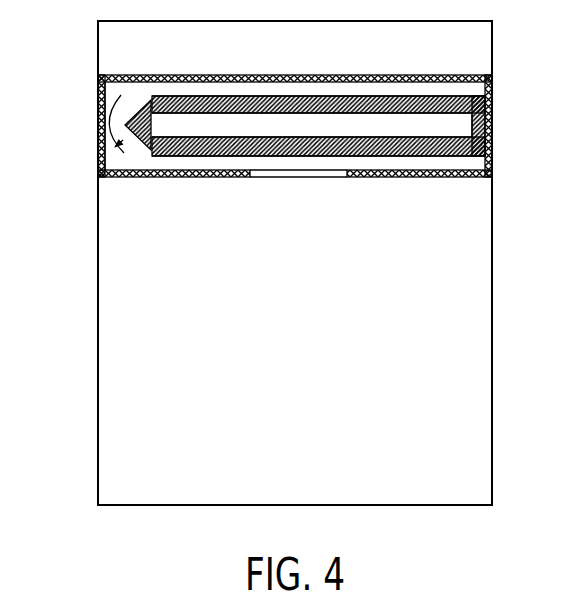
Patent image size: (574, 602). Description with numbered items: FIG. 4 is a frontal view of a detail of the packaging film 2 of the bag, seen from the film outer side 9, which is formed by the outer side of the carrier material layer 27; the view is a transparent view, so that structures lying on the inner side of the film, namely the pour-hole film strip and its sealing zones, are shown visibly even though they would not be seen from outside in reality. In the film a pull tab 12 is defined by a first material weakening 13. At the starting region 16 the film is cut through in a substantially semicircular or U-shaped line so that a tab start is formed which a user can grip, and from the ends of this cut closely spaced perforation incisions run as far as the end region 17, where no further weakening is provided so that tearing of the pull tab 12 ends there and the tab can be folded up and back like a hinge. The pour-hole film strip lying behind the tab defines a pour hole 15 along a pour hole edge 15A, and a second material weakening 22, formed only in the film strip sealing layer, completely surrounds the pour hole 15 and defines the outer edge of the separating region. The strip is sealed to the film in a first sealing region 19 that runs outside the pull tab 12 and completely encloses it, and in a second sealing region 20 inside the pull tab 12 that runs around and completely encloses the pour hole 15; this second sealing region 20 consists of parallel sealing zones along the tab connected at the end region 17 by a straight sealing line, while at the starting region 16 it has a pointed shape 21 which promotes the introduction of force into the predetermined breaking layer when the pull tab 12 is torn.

The packaging film 2 is at (107, 430).
The film outer side 9 is at (372, 483).
The pull tab 12 is at (136, 152).
The first material weakening 13 is at (183, 91).
The pour hole 15 is at (284, 127).
The pour hole edge 15A is at (320, 118).
The starting region 16 is at (99, 156).
The end region 17 is at (496, 95).
The first sealing region 19 is at (411, 74).
The second sealing region 20 is at (366, 95).
The pointed shape 21 is at (136, 107).
The second material weakening 22 is at (239, 92).
The carrier material layer 27 is at (248, 493).